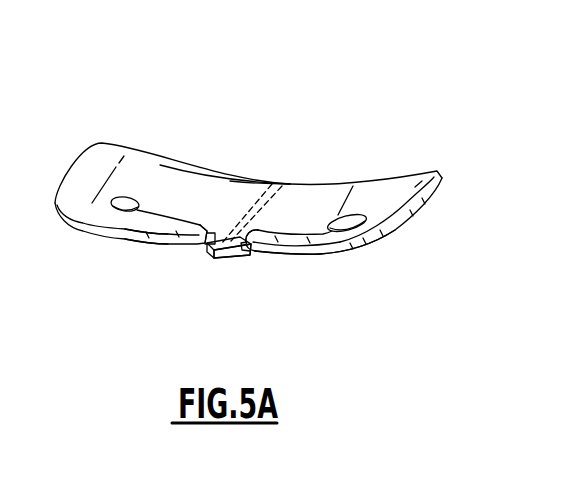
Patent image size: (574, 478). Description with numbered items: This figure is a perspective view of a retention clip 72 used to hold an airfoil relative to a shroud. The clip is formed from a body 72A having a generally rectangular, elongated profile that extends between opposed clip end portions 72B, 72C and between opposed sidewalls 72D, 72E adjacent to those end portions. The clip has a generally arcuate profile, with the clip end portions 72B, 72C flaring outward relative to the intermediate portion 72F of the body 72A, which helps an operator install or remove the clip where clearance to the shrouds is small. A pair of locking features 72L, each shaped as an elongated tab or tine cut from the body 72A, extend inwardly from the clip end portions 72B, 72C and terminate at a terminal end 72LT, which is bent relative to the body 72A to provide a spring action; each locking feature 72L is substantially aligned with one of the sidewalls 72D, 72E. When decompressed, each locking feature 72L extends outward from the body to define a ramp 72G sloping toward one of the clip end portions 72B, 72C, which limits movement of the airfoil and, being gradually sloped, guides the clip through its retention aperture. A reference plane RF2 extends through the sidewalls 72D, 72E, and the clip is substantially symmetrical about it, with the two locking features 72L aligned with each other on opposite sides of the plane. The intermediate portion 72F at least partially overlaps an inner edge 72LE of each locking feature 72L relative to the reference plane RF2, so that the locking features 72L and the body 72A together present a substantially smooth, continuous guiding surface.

The retention clip 72 is at (126, 69).
The body 72A is at (194, 190).
The clip end portion 72B is at (108, 152).
The clip end portion 72C is at (407, 183).
The sidewall 72D is at (214, 249).
The sidewall 72E is at (257, 182).
The intermediate portion 72F is at (220, 253).
The ramp 72G is at (205, 227).
The locking feature 72L is at (152, 232).
The inner edge 72LE is at (168, 218).
The terminal end 72LT is at (204, 234).
The reference plane RF2 is at (280, 187).